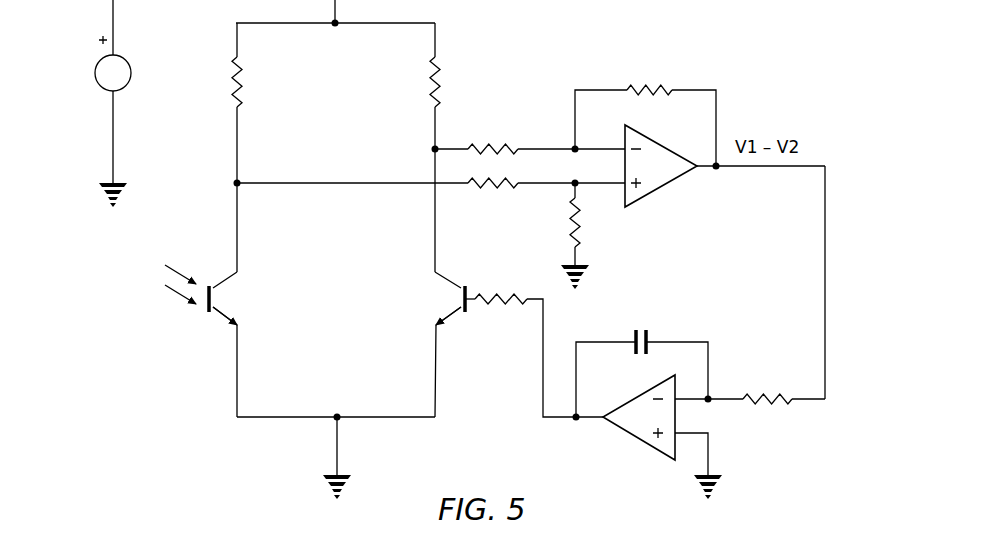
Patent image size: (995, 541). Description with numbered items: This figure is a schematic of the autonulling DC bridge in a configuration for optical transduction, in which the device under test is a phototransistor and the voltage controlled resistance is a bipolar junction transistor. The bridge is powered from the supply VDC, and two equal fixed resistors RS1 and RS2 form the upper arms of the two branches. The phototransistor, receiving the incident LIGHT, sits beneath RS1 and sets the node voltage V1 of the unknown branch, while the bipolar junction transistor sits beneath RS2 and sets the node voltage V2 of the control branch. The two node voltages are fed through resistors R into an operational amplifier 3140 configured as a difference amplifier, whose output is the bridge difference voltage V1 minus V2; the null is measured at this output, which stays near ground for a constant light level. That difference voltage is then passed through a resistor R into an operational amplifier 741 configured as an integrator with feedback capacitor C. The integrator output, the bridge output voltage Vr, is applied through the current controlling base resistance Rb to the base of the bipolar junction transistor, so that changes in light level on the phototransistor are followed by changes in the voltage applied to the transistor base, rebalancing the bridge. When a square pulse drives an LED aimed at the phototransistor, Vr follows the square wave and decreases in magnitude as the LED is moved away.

The DC supply voltage VDC is at (90, 103).
The bridge resistor RS1 is at (232, 78).
The bridge resistor RS2 is at (440, 88).
The bridge node voltage V1 is at (337, 183).
The bridge node voltage V2 is at (435, 149).
The resistor R is at (513, 145).
The CA3140 difference amplifier 3140 is at (681, 175).
The 741 integrator 741 is at (639, 422).
The base resistance Rb is at (497, 294).
The integrator capacitor C is at (648, 333).
The bridge output voltage Vr is at (564, 404).
The light incident on phototransistor LIGHT is at (170, 338).